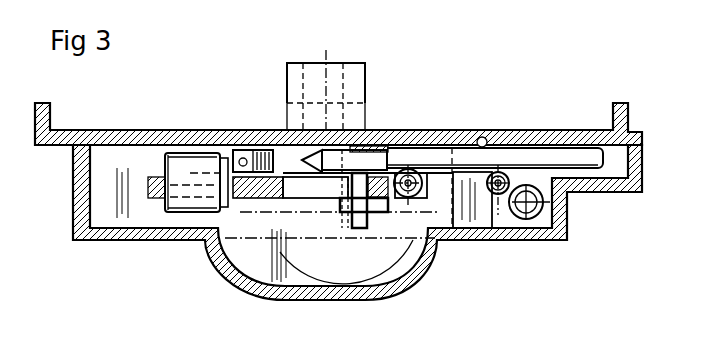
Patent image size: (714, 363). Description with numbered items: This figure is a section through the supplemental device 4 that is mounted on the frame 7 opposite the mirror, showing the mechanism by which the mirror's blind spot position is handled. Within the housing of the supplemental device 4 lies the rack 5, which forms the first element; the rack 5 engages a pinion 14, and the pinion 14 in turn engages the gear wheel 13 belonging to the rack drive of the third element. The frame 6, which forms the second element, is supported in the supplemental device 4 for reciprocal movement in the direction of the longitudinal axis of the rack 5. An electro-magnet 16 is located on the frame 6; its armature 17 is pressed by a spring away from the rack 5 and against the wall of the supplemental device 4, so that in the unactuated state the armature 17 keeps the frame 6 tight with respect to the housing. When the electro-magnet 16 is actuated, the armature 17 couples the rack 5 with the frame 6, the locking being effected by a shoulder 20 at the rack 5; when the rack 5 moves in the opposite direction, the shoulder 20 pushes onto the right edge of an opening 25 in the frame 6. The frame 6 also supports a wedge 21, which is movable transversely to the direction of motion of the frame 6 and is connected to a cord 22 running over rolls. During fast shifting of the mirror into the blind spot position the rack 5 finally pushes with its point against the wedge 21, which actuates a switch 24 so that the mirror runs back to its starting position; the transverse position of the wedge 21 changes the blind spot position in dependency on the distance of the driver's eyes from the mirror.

The supplemental device 4 is at (157, 243).
The rack 5 is at (433, 162).
The frame 6 is at (257, 200).
The frame 7 is at (555, 118).
The gear wheel 13 is at (536, 240).
The pinion 14 is at (490, 238).
The electro-magnet 16 is at (327, 268).
The armature 17 is at (334, 213).
The shoulder 20 is at (398, 220).
The wedge 21 is at (268, 148).
The cord 22 is at (243, 157).
The switch 24 is at (178, 172).
The opening 25 is at (303, 183).